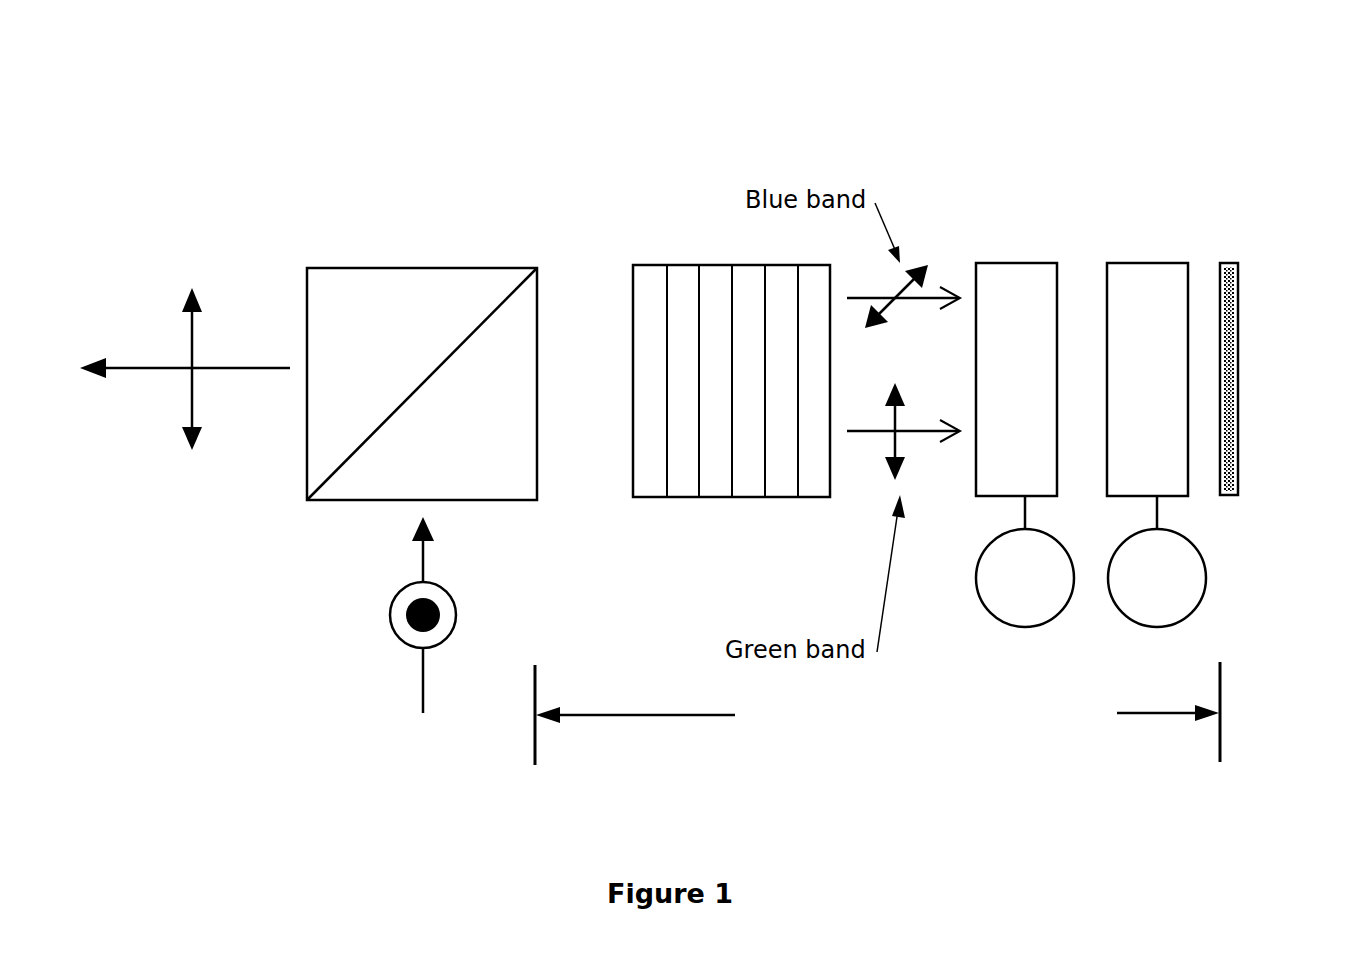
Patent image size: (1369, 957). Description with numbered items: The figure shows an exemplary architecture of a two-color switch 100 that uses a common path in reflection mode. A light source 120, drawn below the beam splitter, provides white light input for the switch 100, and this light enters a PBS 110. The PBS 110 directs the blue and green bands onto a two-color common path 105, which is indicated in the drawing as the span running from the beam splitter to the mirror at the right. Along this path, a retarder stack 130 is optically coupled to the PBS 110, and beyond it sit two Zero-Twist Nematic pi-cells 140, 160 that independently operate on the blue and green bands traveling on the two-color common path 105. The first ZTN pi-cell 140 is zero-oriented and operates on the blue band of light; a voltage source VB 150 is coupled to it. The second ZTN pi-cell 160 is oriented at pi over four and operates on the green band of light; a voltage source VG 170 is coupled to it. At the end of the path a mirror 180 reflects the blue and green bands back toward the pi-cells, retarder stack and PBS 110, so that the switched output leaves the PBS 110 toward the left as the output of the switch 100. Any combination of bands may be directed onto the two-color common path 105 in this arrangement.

The two-color switch 100 is at (128, 80).
The two-color common path 105 is at (877, 713).
The PBS 110 is at (430, 266).
The light source 120 is at (405, 645).
The retarder stack 130 is at (753, 263).
The ZTN pi-cell 140 is at (1020, 262).
The voltage source VB 150 is at (1020, 632).
The ZTN pi-cell 160 is at (1143, 262).
The voltage source VG 170 is at (1197, 615).
The mirror 180 is at (1233, 263).